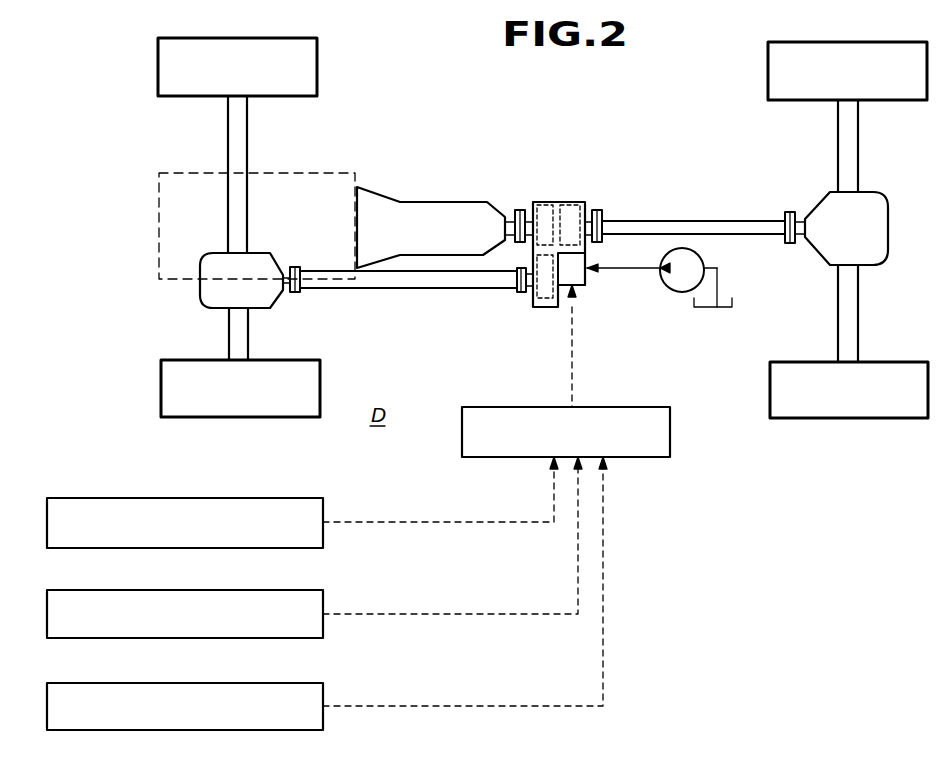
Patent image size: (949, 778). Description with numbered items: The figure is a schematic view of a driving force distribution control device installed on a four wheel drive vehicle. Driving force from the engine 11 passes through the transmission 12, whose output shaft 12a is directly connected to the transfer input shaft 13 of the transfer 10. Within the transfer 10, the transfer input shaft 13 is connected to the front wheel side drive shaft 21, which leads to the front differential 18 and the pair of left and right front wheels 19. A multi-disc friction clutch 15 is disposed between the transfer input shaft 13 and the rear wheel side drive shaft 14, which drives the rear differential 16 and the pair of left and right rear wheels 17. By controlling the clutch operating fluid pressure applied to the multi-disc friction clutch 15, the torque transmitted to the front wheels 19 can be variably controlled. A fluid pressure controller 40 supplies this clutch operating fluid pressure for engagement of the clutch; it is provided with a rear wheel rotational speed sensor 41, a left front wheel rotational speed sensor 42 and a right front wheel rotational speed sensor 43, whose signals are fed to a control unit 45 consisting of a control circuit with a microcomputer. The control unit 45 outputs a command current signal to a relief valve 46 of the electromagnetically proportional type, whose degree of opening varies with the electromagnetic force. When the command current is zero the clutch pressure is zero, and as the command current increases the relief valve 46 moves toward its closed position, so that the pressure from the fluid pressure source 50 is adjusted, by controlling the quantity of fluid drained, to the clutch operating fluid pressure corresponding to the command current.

The transfer 10 is at (541, 202).
The engine 11 is at (309, 173).
The transmission 12 is at (446, 202).
The output shaft of the transmission 12a is at (512, 212).
The transfer input shaft 13 is at (520, 210).
The rear wheel side drive shaft 14 is at (705, 221).
The multi-disc friction clutch 15 is at (570, 205).
The rear differential 16 is at (880, 196).
The rear wheels 17 is at (912, 100).
The front differential 18 is at (200, 297).
The front wheels 19 is at (158, 62).
The front wheel side drive shaft 21 is at (416, 298).
The fluid pressure controller 40 is at (488, 385).
The rear wheel rotational speed sensor 41 is at (305, 498).
The left front wheel rotational speed sensor 42 is at (305, 590).
The right front wheel rotational speed sensor 43 is at (305, 683).
The control unit 45 is at (646, 407).
The relief valve 46 is at (591, 330).
The fluid pressure source 50 is at (682, 292).